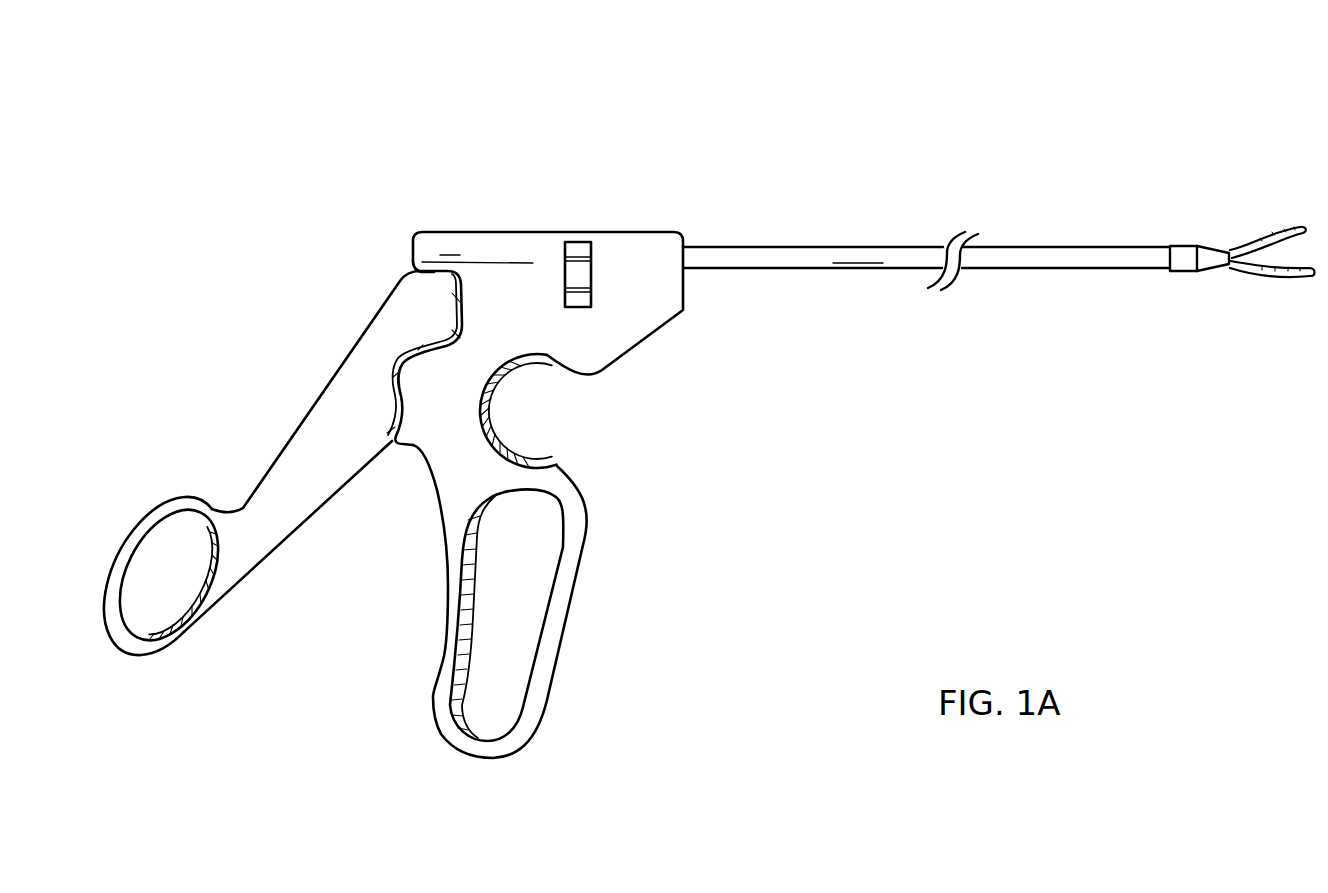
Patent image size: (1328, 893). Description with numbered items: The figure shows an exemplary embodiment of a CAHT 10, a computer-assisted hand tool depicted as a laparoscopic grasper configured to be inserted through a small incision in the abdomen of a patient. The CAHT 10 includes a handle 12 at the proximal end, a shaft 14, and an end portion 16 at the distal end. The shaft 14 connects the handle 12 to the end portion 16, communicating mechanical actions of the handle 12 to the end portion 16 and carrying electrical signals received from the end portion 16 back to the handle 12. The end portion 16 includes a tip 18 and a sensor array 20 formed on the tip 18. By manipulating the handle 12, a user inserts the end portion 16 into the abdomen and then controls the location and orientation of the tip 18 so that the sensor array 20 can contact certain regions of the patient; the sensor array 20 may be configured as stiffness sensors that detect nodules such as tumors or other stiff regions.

The CAHT 10 is at (707, 400).
The handle 12 is at (387, 514).
The shaft 14 is at (926, 307).
The end portion 16 is at (1242, 214).
The tip 18 is at (1250, 211).
The sensor array 20 is at (1272, 323).